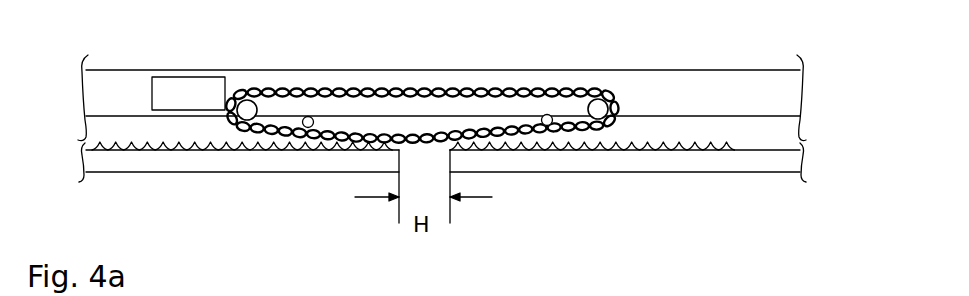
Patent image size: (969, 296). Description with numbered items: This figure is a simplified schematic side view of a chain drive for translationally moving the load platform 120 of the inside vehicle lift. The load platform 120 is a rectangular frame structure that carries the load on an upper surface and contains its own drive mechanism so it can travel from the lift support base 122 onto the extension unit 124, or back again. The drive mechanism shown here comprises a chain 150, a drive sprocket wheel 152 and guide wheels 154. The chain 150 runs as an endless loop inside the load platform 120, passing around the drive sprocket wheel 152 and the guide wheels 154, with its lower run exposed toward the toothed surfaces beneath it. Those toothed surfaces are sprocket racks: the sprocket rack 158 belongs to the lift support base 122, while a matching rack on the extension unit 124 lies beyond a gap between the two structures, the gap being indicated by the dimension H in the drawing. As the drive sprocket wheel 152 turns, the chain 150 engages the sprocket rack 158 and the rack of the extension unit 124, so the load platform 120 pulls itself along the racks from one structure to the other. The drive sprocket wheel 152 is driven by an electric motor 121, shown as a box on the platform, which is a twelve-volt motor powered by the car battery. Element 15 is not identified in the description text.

The toothed surface 15 is at (663, 150).
The load platform 120 is at (747, 70).
The electric motor 121 is at (158, 77).
The lift support base 122 is at (157, 172).
The extension unit 124 is at (732, 168).
The chain 150 is at (437, 90).
The drive sprocket wheel 152 is at (260, 88).
The guide wheels 154 is at (555, 120).
The sprocket rack 158 is at (210, 152).